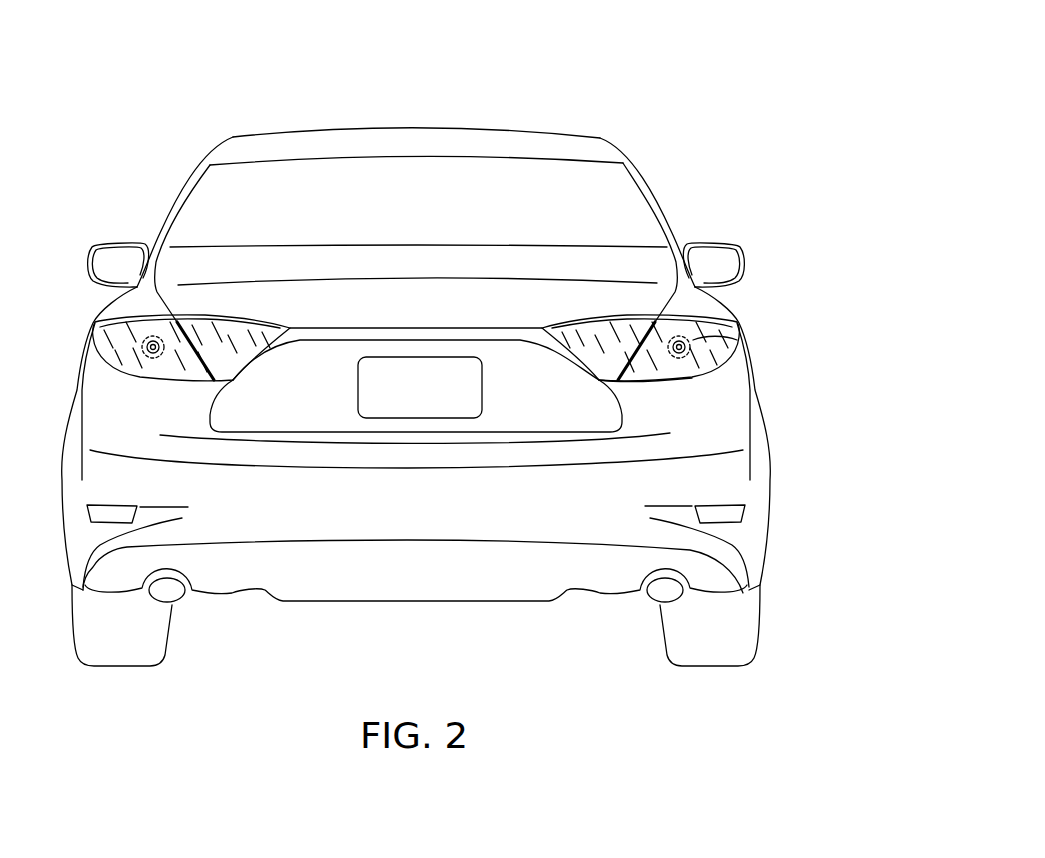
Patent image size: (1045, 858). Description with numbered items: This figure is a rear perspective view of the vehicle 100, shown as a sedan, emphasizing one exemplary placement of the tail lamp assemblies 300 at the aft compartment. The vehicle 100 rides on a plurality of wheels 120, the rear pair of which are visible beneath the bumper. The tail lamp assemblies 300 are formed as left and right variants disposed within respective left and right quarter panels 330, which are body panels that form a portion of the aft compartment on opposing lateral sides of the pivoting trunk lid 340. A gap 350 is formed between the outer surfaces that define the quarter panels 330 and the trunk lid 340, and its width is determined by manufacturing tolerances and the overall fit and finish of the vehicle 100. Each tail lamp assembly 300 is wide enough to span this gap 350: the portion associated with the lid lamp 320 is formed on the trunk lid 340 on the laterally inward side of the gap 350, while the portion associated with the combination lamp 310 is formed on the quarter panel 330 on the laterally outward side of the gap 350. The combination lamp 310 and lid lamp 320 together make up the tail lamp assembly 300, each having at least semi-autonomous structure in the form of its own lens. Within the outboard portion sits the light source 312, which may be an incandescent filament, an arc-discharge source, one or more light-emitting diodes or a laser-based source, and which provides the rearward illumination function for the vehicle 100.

The vehicle 100 is at (640, 107).
The wheels 120 is at (710, 667).
The tail lamp assembly 300 is at (757, 317).
The combination lamp 310 is at (643, 372).
The light source 312 is at (743, 350).
The lid lamp 320 is at (613, 340).
The quarter panel 330 is at (727, 400).
The trunk lid 340 is at (440, 316).
The gap 350 is at (680, 303).